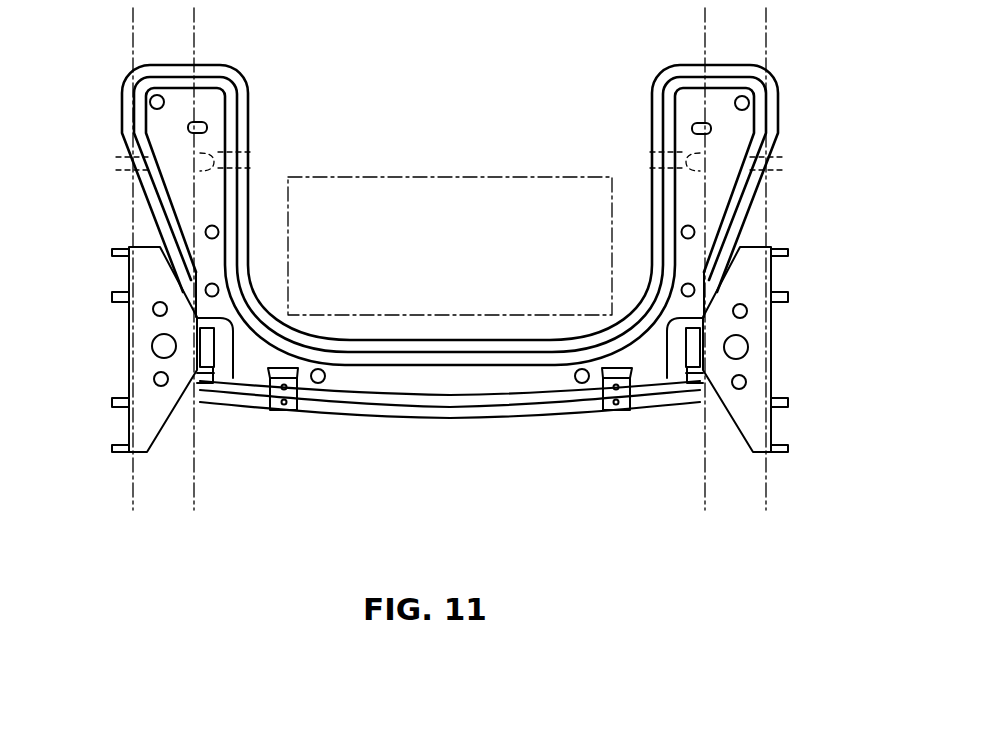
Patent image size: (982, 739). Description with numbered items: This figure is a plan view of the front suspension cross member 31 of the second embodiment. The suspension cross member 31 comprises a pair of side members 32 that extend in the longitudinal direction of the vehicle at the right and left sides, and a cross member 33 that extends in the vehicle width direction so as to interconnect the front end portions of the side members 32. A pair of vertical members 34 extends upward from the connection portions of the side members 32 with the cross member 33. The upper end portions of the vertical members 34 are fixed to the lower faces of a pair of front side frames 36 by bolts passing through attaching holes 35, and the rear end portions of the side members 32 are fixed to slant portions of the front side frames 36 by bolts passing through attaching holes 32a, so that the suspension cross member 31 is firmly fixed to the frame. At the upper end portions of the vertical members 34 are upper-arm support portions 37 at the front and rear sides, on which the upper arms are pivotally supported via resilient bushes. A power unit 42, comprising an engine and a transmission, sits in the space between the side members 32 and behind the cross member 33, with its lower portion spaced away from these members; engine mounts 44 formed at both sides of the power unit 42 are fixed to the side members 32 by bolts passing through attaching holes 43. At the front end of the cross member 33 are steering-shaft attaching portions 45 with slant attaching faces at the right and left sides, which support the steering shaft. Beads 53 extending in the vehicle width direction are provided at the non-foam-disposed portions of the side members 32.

The front suspension cross member 31 is at (477, 103).
The side member 32 is at (213, 66).
The attaching hole 32a is at (152, 92).
The cross member 33 is at (432, 420).
The vertical member 34 is at (222, 378).
The attaching hole 35 is at (157, 373).
The front side frame 36 is at (130, 493).
The upper-arm support portion 37 is at (108, 266).
The power unit 42 is at (415, 176).
The attaching hole 43 is at (218, 288).
The engine mount 44 is at (250, 247).
The steering-shaft attaching portion 45 is at (287, 410).
The bead 53 is at (783, 134).